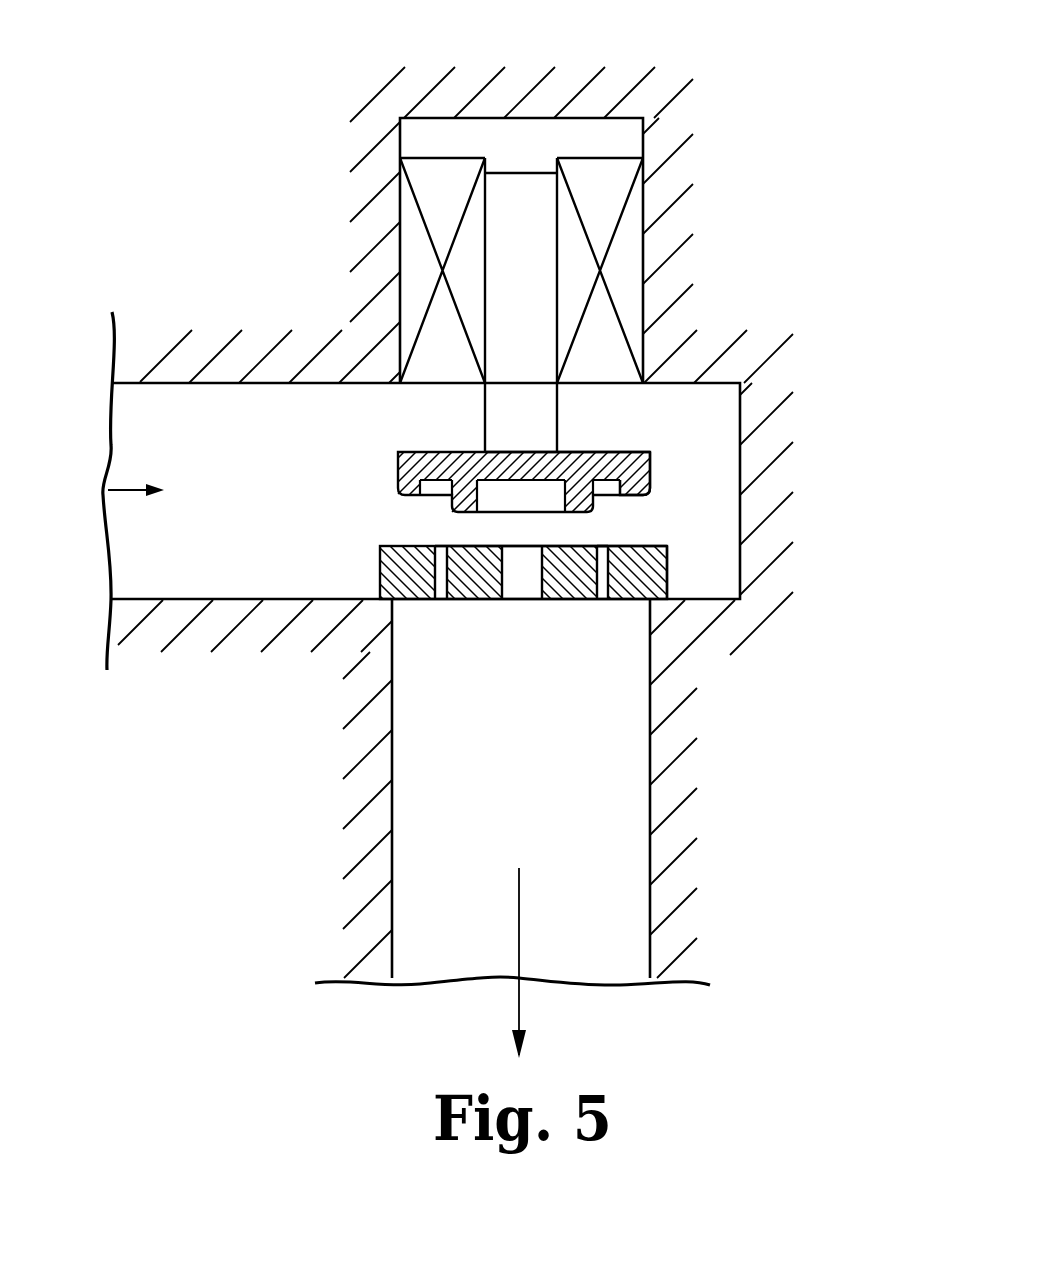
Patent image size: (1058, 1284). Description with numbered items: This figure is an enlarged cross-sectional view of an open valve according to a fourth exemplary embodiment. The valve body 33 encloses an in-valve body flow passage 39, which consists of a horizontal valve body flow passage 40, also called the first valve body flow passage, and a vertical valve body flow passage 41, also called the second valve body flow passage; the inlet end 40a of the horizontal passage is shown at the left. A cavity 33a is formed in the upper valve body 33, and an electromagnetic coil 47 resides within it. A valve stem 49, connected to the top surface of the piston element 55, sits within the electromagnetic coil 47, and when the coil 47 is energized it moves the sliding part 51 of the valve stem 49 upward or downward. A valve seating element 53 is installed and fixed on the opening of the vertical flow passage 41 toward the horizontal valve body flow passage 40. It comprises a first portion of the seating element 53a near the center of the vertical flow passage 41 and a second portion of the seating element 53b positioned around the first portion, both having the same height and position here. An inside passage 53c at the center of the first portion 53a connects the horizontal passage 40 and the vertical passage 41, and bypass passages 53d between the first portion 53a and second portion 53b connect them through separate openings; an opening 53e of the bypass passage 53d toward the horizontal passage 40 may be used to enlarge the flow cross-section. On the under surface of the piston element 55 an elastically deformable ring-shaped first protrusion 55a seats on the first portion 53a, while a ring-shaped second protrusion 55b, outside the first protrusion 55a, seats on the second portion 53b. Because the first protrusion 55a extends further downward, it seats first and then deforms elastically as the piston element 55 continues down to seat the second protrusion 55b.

The valve body 33 is at (326, 718).
The cavity 33a is at (402, 190).
The in-valve body flow passage 39 is at (384, 685).
The horizontal valve body flow passage 40 is at (384, 563).
The passage inlet 40a is at (170, 598).
The vertical valve body flow passage 41 is at (407, 830).
The electromagnetic coil 47 is at (607, 207).
The valve stem 49 is at (528, 190).
The sliding part 51 is at (485, 257).
The valve seating element 53 is at (599, 591).
The first portion of the seating element 53a is at (570, 545).
The second portion of the seating element 53b is at (690, 575).
The inside passage 53c is at (513, 600).
The bypass passages 53d is at (438, 600).
The opening 53e is at (437, 546).
The piston element 55 is at (663, 400).
The first protrusion 55a is at (560, 452).
The second protrusion 55b is at (648, 493).